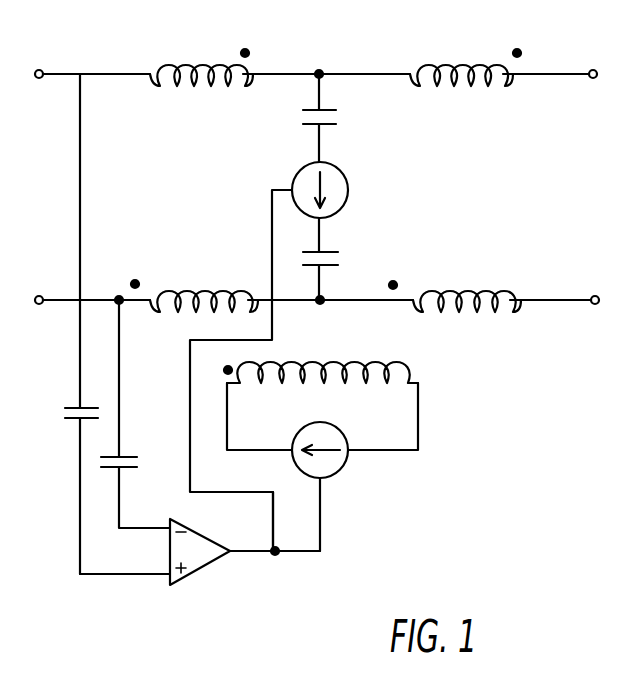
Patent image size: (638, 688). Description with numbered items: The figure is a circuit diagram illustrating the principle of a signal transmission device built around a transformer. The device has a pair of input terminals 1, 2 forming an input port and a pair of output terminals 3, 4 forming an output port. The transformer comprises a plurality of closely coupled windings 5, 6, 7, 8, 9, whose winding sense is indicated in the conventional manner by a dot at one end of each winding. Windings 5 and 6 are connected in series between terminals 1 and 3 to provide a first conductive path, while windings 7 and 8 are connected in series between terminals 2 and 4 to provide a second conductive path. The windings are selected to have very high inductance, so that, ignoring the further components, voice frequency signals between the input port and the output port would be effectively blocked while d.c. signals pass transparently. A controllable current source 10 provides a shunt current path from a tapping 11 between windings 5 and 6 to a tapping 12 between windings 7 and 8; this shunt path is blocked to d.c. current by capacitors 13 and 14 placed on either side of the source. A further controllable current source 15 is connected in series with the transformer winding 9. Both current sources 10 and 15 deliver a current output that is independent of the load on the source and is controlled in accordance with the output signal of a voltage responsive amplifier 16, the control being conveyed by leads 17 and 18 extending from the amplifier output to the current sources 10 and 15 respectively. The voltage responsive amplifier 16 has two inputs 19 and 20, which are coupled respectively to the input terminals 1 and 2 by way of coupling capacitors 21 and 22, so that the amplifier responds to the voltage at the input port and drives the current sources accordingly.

The input terminal 1 is at (41, 69).
The input terminal 2 is at (41, 295).
The output terminal 3 is at (596, 69).
The output terminal 4 is at (598, 295).
The transformer winding 5 is at (191, 66).
The transformer winding 6 is at (461, 66).
The transformer winding 7 is at (198, 292).
The transformer winding 8 is at (472, 291).
The transformer winding 9 is at (374, 367).
The controllable current source 10 is at (345, 180).
The tapping 11 is at (321, 70).
The tapping 12 is at (323, 304).
The capacitor 13 is at (340, 118).
The capacitor 14 is at (340, 251).
The further controllable current source 15 is at (346, 466).
The voltage responsive amplifier 16 is at (197, 556).
The lead 17 is at (257, 497).
The lead 18 is at (305, 553).
The amplifier input 19 is at (108, 576).
The amplifier input 20 is at (149, 526).
The coupling capacitor 21 is at (72, 419).
The coupling capacitor 22 is at (131, 455).